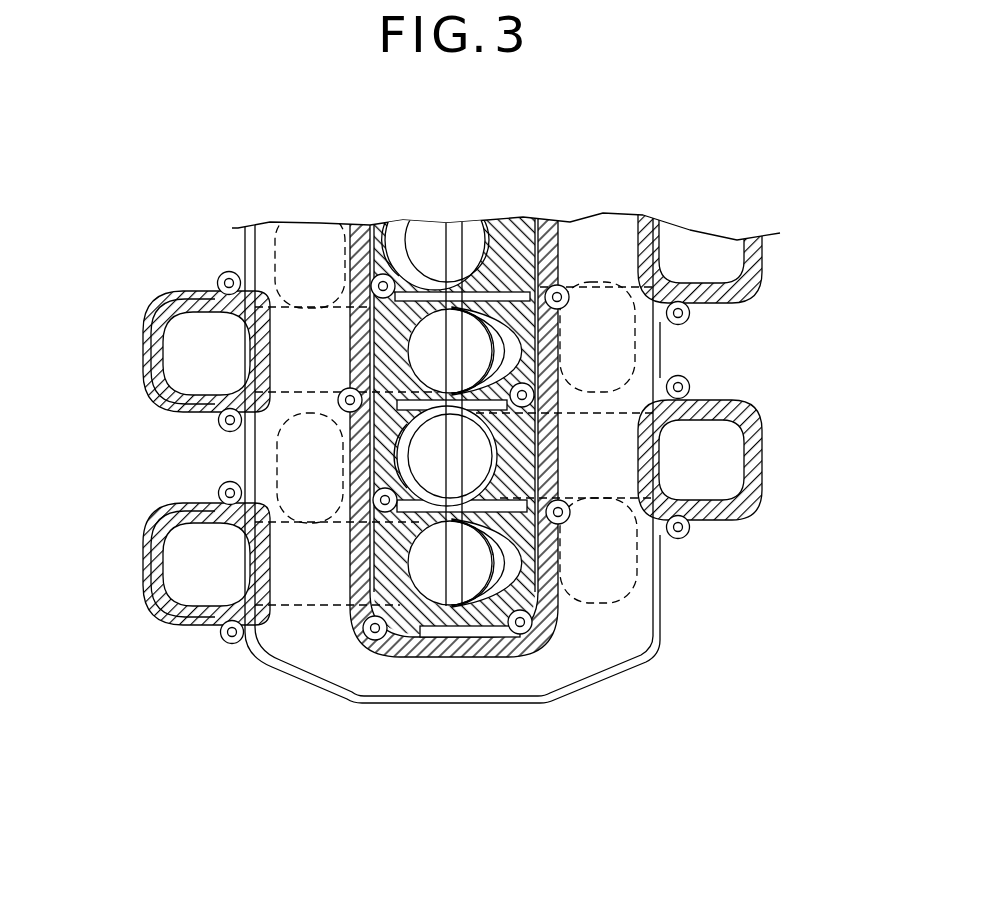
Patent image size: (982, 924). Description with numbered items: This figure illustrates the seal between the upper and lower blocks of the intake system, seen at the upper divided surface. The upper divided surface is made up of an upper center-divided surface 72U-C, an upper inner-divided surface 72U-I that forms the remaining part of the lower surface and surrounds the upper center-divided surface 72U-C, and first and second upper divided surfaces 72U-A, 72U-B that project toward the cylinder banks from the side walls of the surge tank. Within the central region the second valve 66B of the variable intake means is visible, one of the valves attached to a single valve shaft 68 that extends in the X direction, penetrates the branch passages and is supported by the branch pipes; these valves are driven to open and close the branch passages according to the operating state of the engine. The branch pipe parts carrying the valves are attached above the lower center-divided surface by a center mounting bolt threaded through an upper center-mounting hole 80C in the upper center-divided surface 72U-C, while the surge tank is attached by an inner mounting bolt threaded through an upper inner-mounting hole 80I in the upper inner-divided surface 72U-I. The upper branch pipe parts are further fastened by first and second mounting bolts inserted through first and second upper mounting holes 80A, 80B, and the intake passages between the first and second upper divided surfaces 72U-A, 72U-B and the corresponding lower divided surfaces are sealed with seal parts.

The upper inner-divided surface 72U-I is at (263, 250).
The upper center-mounting hole 80C is at (380, 276).
The valve shaft 68 is at (453, 228).
The upper inner-mounting hole 80I is at (559, 286).
The first upper divided surface 72U-A is at (762, 250).
The second upper mounting hole 80B is at (218, 276).
The second upper divided surface 72U-B is at (145, 362).
The first upper mounting hole 80A is at (690, 316).
The upper center-divided surface 72U-C is at (541, 533).
The second valve 66B is at (437, 585).